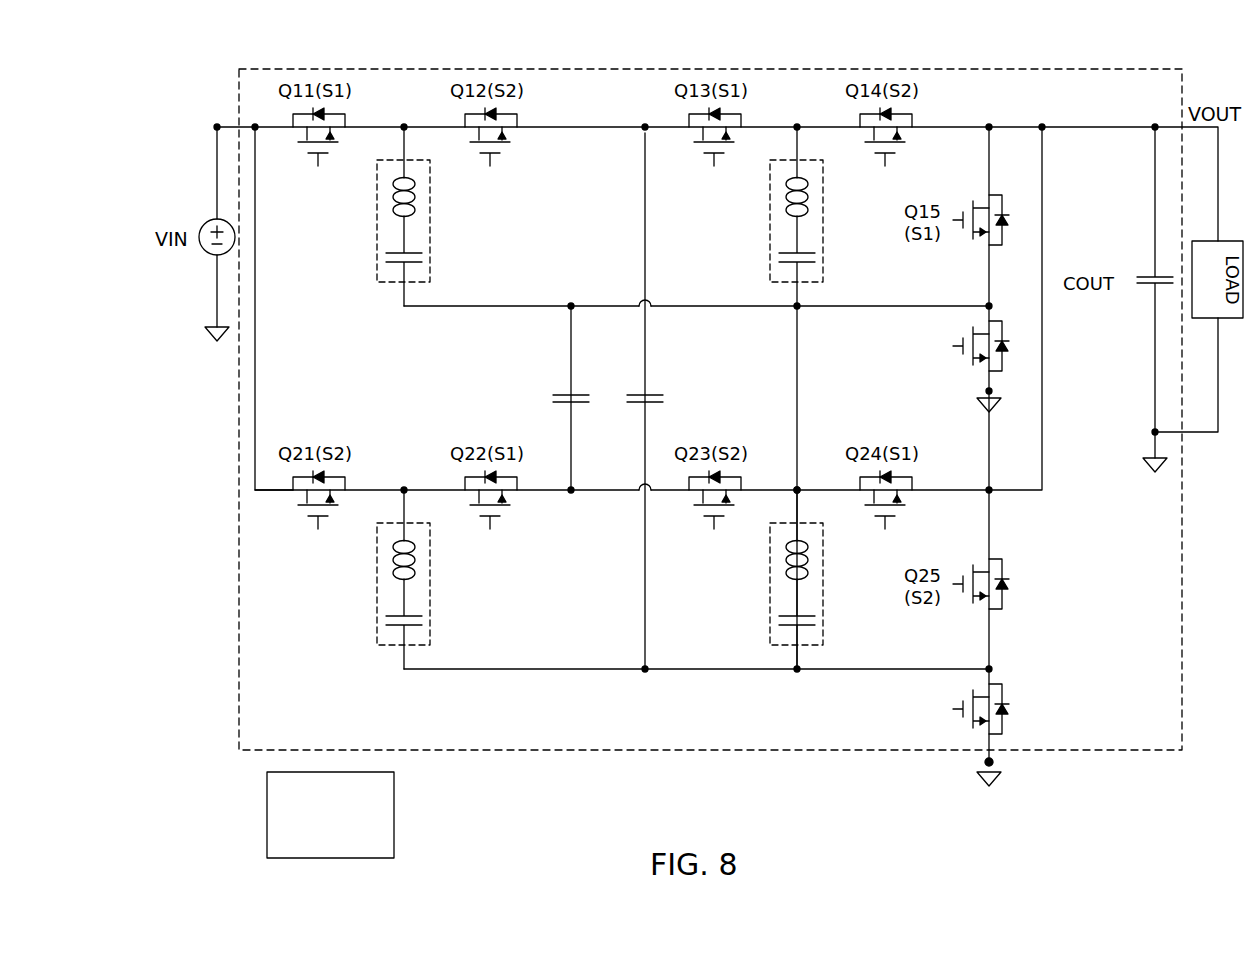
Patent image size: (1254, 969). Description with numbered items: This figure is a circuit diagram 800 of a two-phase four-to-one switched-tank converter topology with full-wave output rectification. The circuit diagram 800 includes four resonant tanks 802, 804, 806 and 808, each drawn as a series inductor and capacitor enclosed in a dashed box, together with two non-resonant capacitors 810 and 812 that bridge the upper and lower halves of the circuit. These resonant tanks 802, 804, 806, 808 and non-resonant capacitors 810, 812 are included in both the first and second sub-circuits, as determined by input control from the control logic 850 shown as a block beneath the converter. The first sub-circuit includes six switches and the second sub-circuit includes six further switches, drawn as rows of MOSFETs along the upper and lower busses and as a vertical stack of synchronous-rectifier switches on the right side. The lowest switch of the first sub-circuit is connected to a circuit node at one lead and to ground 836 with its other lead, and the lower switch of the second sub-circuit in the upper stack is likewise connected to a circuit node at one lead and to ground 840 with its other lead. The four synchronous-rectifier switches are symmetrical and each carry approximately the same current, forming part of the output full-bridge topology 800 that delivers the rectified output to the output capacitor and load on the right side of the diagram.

The circuit diagram 800 is at (1152, 66).
The resonant tank 802 is at (430, 218).
The resonant tank 804 is at (826, 255).
The resonant tank 806 is at (430, 581).
The resonant tank 808 is at (826, 618).
The non-resonant capacitor 810 is at (551, 380).
The non-resonant capacitor 812 is at (665, 380).
The ground 836 is at (995, 765).
The ground 840 is at (995, 393).
The control logic 850 is at (330, 815).